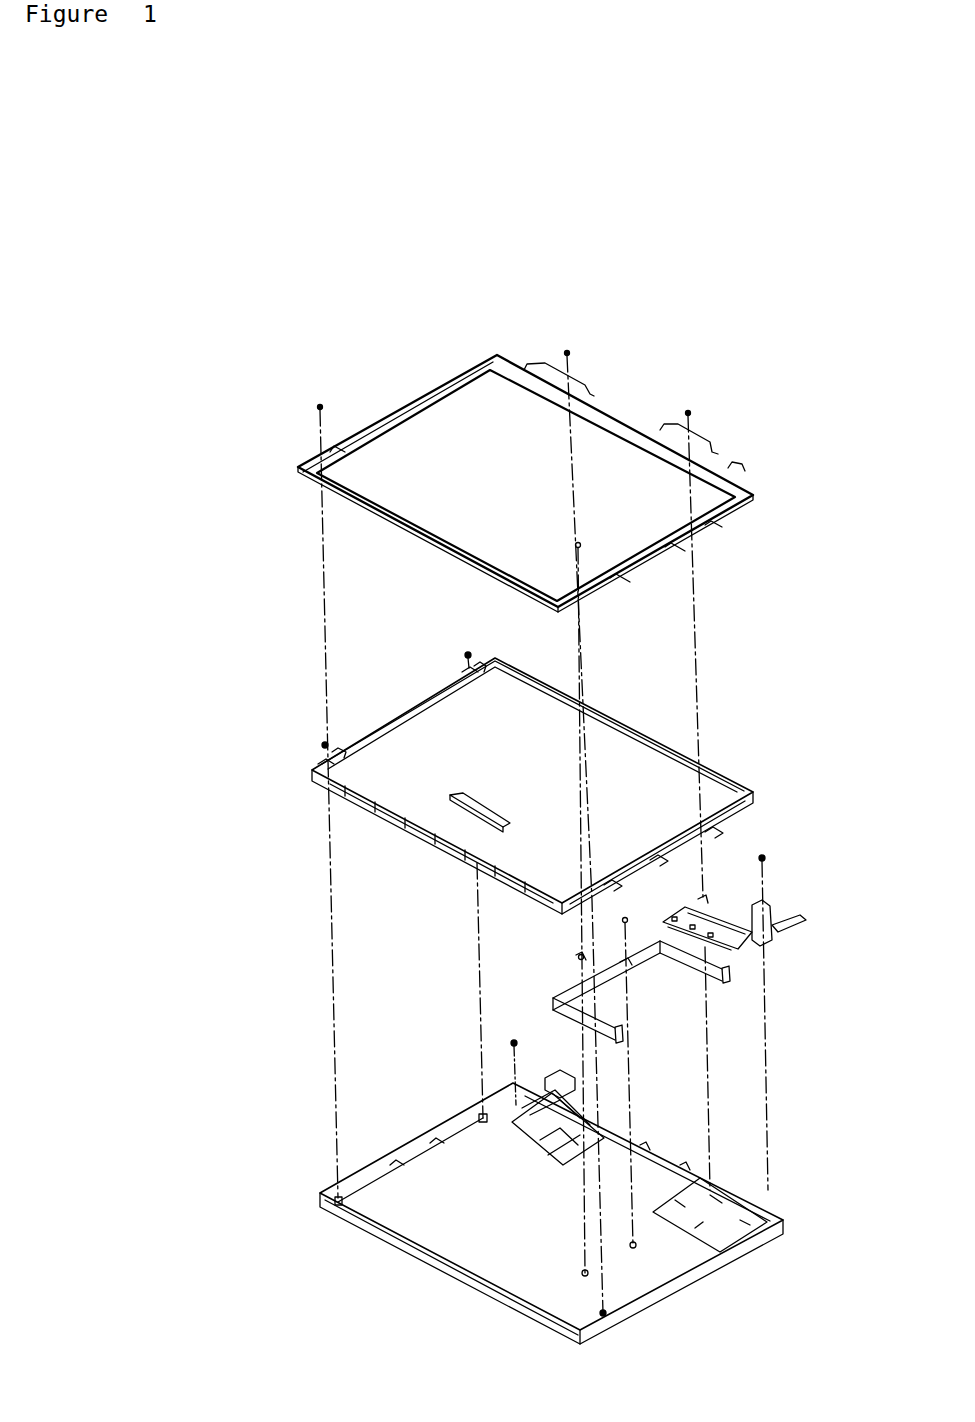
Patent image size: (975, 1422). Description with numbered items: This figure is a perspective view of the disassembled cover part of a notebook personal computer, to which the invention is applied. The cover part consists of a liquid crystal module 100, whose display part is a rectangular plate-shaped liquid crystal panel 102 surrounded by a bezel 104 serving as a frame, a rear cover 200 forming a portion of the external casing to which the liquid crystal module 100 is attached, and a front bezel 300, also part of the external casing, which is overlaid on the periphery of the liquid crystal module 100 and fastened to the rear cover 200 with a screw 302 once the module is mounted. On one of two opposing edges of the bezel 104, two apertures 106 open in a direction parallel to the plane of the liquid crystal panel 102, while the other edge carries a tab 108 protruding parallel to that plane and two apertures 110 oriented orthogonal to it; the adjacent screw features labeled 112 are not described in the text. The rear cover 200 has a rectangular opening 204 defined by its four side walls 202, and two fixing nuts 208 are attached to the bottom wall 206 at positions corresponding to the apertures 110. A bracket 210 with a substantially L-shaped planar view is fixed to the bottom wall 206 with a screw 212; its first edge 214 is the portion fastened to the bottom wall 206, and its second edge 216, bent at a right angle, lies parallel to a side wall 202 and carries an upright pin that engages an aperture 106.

The liquid crystal module 100 is at (655, 725).
The liquid crystal panel 102 is at (532, 755).
The bezel 104 is at (753, 790).
The apertures 106 is at (612, 880).
The tab 108 is at (481, 664).
The apertures 110 is at (468, 672).
The corner screw 112 is at (468, 652).
The rear cover 200 is at (412, 1264).
The side walls 202 is at (388, 1150).
The rectangular opening 204 is at (495, 1263).
The bottom wall 206 is at (517, 1213).
The fixing nuts 208 is at (482, 1114).
The bracket 210 is at (725, 992).
The screw 212 is at (627, 918).
The first edge 214 is at (575, 1005).
The second edge 216 is at (728, 977).
The front bezel 300 is at (722, 453).
The screw 302 is at (570, 350).